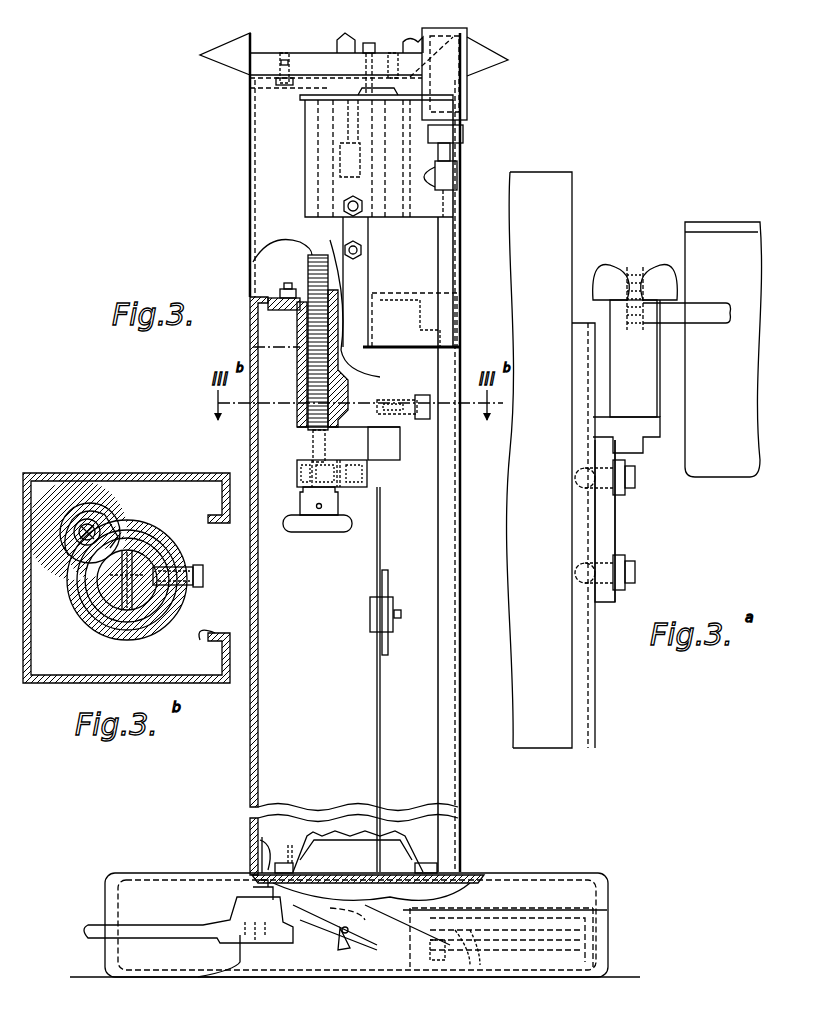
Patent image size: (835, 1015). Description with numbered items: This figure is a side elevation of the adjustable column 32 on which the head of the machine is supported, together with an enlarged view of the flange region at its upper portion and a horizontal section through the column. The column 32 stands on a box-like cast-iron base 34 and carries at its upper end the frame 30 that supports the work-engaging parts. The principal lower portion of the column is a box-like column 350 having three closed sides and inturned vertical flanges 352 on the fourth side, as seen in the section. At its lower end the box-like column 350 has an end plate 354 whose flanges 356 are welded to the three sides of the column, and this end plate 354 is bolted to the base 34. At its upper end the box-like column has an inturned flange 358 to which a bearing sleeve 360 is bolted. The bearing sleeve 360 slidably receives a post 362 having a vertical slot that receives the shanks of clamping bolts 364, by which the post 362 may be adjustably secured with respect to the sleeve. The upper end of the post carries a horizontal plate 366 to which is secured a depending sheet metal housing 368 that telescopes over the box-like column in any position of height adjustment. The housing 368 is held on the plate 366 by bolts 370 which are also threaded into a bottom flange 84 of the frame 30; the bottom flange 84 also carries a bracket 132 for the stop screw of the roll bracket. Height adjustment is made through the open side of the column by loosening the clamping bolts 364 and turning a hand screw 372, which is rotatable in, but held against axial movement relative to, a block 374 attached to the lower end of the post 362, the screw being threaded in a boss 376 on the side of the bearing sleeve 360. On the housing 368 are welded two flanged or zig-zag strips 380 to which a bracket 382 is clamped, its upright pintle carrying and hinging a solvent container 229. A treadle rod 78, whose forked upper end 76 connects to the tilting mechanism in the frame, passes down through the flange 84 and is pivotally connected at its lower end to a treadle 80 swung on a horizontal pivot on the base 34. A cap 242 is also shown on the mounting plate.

In FIG. 3, the frame 30 is at (500, 62).
In FIG. 3, the adjustable column 32 is at (250, 430).
In FIG. 3, the box-like base 34 is at (585, 875).
In FIG. 3, the forked upper end of treadle rod 76 is at (368, 43).
In FIG. 3, the treadle rod 78 is at (376, 545).
In FIG. 3, the treadle 80 is at (88, 925).
In FIG. 3, the bottom flange 84 is at (285, 52).
In FIG. 3, the bracket 132 is at (340, 42).
In FIG. 3, the solvent container 229 is at (437, 212).
In FIG. 3A, the solvent container 229 is at (708, 240).
In FIG. 3, the cap 242 is at (405, 40).
In FIG. 3, the box-like column 350 is at (249, 705).
In FIG. 3B, the box-like column 350 is at (165, 473).
In FIG. 3, the inturned vertical flanges 352 is at (445, 620).
In FIG. 3B, the inturned vertical flanges 352 is at (203, 643).
In FIG. 3, the end plate 354 is at (262, 838).
In FIG. 3, the flanges 356 is at (262, 860).
In FIG. 3, the inturned flange 358 is at (280, 295).
In FIG. 3, the bearing sleeve 360 is at (330, 392).
In FIG. 3B, the bearing sleeve 360 is at (103, 630).
In FIG. 3, the post 362 is at (392, 455).
In FIG. 3B, the post 362 is at (165, 605).
In FIG. 3, the clamping bolts 364 is at (380, 377).
In FIG. 3B, the clamping bolts 364 is at (178, 575).
In FIG. 3, the horizontal plate 366 is at (470, 36).
In FIG. 3, the sheet metal housing 368 is at (249, 160).
In FIG. 3A, the sheet metal housing 368 is at (565, 217).
In FIG. 3, the bolts 370 is at (283, 86).
In FIG. 3, the hand screw 372 is at (302, 412).
In FIG. 3B, the hand screw 372 is at (82, 520).
In FIG. 3, the block 374 is at (340, 482).
In FIG. 3B, the block 374 is at (112, 582).
In FIG. 3B, the boss 376 is at (100, 545).
In FIG. 3, the flanged or zig-zag strips 380 is at (365, 278).
In FIG. 3A, the flanged or zig-zag strips 380 is at (594, 684).
In FIG. 3, the bracket 382 is at (362, 228).
In FIG. 3A, the bracket 382 is at (612, 528).